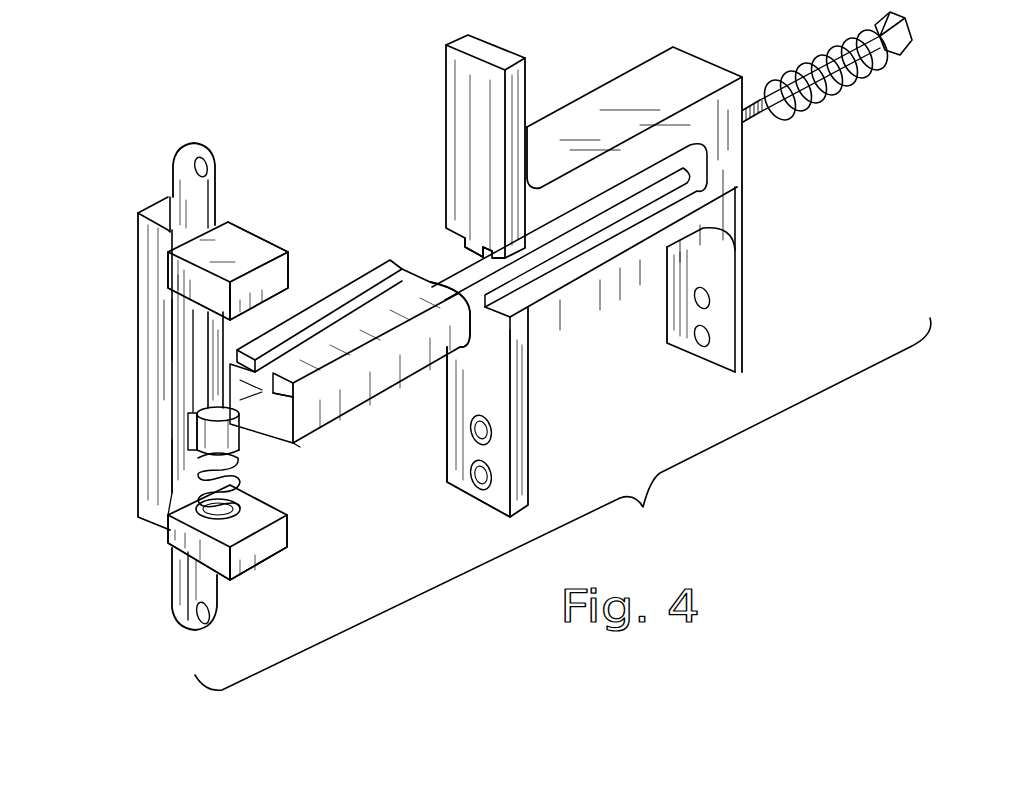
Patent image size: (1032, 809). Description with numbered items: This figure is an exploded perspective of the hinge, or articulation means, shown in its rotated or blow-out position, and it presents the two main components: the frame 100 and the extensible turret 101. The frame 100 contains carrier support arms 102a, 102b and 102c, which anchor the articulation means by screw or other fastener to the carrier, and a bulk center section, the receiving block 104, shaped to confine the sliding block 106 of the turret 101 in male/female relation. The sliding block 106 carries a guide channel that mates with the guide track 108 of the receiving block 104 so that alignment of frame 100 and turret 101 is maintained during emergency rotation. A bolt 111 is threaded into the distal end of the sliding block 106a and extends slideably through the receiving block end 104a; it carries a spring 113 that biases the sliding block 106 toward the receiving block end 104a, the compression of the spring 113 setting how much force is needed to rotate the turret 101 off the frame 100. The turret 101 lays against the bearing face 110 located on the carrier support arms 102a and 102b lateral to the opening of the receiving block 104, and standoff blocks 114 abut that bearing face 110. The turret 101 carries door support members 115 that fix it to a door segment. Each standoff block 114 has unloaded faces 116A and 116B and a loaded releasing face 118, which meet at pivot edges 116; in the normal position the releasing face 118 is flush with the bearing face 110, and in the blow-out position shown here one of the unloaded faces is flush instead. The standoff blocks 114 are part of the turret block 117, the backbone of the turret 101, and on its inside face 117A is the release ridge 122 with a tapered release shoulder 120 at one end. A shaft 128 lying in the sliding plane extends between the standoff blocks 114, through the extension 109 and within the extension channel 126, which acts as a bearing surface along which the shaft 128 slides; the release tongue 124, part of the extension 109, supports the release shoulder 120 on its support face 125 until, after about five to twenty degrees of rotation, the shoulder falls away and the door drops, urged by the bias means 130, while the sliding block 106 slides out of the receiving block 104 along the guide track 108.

The frame 100 is at (620, 123).
The extensible turret 101 is at (148, 190).
The carrier support arm 102a is at (520, 85).
The carrier support arm 102b is at (515, 427).
The carrier support arm 102c is at (738, 318).
The receiving block 104 is at (573, 307).
The receiving block end 104a is at (722, 173).
The sliding block 106 is at (372, 391).
The distal end of sliding block 106a is at (445, 323).
The guide track 108 is at (465, 258).
The extension 109 is at (300, 440).
The bearing face 110 is at (458, 112).
The bolt 111 is at (823, 57).
The spring 113 is at (822, 100).
The standoff block 114 is at (230, 220).
The door support member 115 is at (207, 187).
The pivot edge 116 is at (245, 256).
The unloaded face 116A is at (178, 268).
The unloaded face 116B is at (305, 225).
The turret block 117 is at (150, 315).
The inside face of turret block 117A is at (178, 473).
The releasing face 118 is at (278, 296).
The release shoulder 120 is at (178, 428).
The release ridge 122 is at (178, 332).
The release tongue 124 is at (180, 457).
The support face 125 is at (170, 360).
The extension channel 126 is at (280, 432).
The shaft 128 is at (213, 373).
The bias means 130 is at (227, 463).